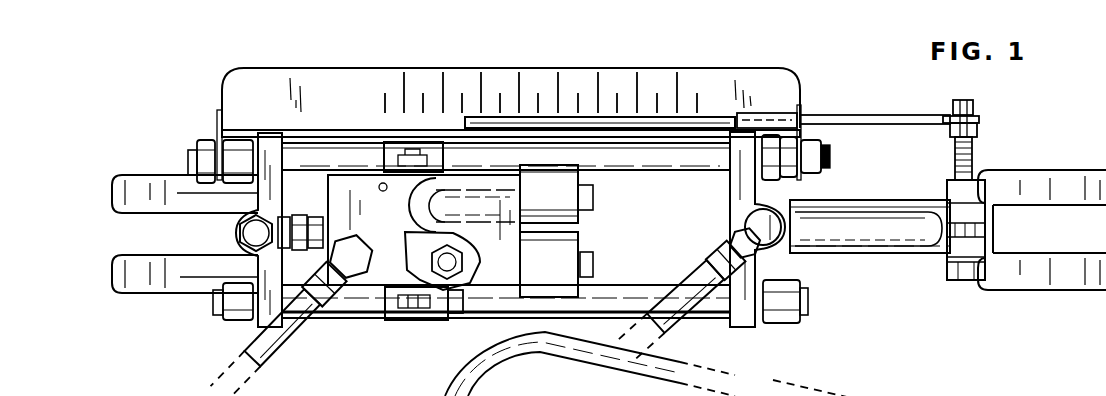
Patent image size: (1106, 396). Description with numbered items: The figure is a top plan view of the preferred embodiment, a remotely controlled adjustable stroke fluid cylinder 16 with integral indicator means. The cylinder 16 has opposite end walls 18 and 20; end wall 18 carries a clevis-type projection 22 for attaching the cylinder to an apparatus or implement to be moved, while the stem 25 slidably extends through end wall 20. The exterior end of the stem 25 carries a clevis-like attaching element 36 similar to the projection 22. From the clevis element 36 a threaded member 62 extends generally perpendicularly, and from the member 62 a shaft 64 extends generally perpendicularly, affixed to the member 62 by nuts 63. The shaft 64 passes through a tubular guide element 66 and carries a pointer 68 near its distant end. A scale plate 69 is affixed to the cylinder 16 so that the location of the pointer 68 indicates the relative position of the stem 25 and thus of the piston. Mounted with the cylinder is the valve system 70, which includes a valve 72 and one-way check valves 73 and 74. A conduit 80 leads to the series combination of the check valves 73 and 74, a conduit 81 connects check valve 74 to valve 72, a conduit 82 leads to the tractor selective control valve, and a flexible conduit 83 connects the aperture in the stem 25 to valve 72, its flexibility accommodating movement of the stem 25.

The remotely controlled adjustable stroke fluid cylinder 16 is at (340, 326).
The end wall 18 is at (268, 132).
The end wall 20 is at (752, 322).
The clevis-type projection 22 is at (124, 292).
The stem 25 is at (893, 255).
The clevis-like attaching element 36 is at (1058, 290).
The threaded member 62 is at (975, 160).
The nuts 63 is at (975, 128).
The shaft 64 is at (878, 115).
The tubular guide element 66 is at (756, 116).
The pointer 68 is at (500, 118).
The scale plate 69 is at (715, 67).
The valve system 70 is at (348, 168).
The valve 72 is at (460, 287).
The oneway check valve 73 is at (592, 208).
The oneway check valve 74 is at (592, 240).
The conduit 80 is at (246, 233).
The conduit 81 is at (283, 338).
The conduit 82 is at (692, 306).
The conduit 83 is at (440, 205).